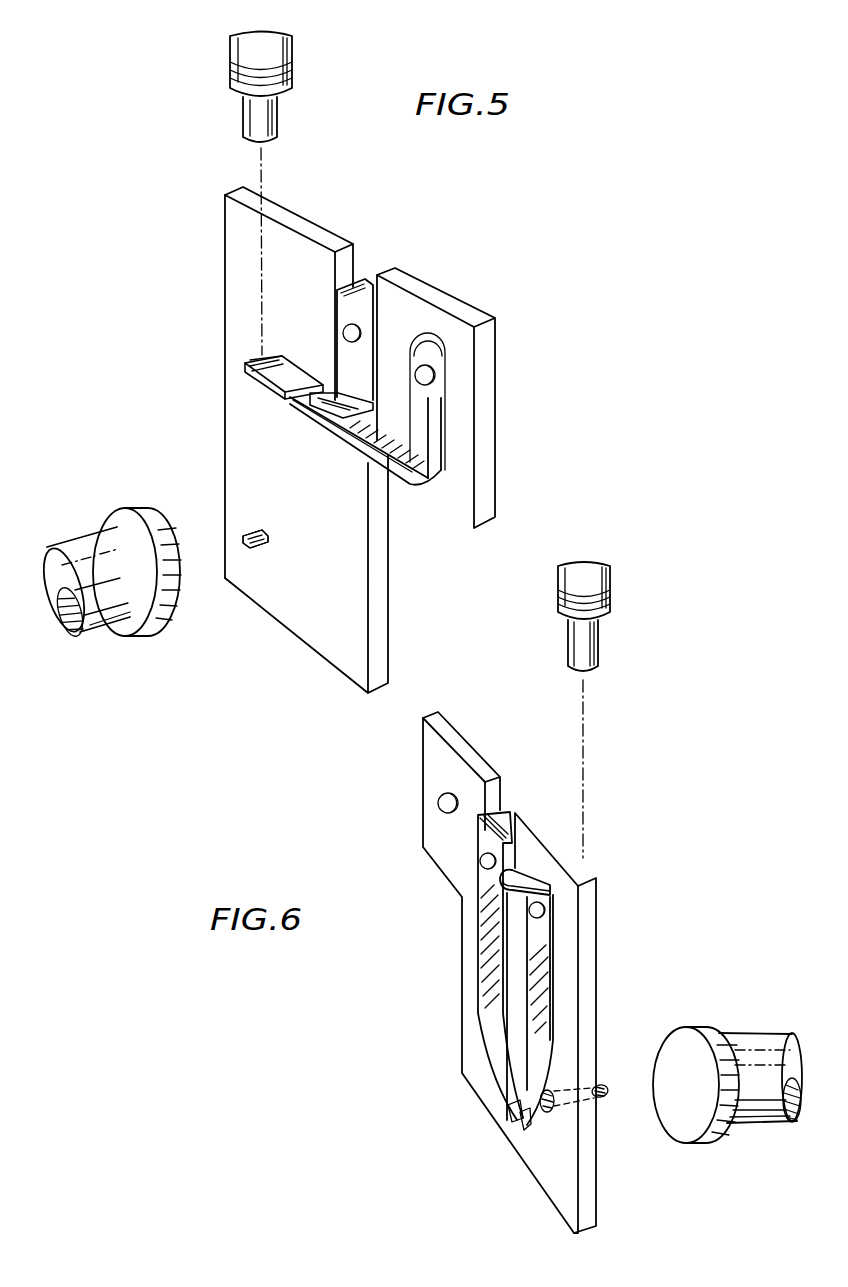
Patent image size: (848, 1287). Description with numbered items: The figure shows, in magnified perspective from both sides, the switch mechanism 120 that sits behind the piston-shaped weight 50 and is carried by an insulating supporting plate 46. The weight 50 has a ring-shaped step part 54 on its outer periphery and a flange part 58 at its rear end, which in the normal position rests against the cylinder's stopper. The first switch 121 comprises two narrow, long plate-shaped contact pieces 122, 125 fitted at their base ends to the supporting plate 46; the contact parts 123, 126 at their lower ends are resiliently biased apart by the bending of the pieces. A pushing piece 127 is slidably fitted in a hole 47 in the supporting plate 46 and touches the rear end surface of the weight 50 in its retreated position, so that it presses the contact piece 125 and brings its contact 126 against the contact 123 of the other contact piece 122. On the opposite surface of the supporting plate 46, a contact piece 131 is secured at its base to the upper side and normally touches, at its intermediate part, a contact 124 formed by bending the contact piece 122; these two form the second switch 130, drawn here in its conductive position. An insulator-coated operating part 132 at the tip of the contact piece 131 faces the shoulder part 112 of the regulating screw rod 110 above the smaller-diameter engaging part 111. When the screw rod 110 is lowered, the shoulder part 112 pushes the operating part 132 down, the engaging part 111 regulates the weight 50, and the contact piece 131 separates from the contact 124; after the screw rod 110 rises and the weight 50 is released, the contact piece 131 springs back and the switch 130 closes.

In FIG. 5, the insulating supporting plate 46 is at (350, 448).
In FIG. 6, the insulating supporting plate 46 is at (588, 910).
In FIG. 5, the hole in supporting plate 47 is at (263, 547).
In FIG. 5, the weight 50 is at (104, 569).
In FIG. 6, the weight 50 is at (727, 1077).
In FIG. 5, the step part 54 is at (110, 625).
In FIG. 6, the step part 54 is at (760, 1112).
In FIG. 5, the flange part 58 is at (152, 520).
In FIG. 6, the flange part 58 is at (717, 1130).
In FIG. 5, the regulating screw rod 110 is at (251, 194).
In FIG. 6, the regulating screw rod 110 is at (588, 710).
In FIG. 5, the engaging part 111 is at (268, 119).
In FIG. 6, the engaging part 111 is at (576, 652).
In FIG. 5, the shoulder part 112 is at (285, 97).
In FIG. 6, the shoulder part 112 is at (605, 622).
In FIG. 6, the switch mechanism 120 is at (507, 999).
In FIG. 6, the first switch 121 is at (484, 880).
In FIG. 5, the contact piece 122 is at (360, 290).
In FIG. 6, the contact piece 122 is at (488, 942).
In FIG. 6, the contact part 123 is at (505, 1112).
In FIG. 5, the contact 124 is at (358, 465).
In FIG. 6, the contact piece 125 is at (540, 957).
In FIG. 6, the contact part 126 is at (522, 1122).
In FIG. 5, the pushing piece 127 is at (247, 548).
In FIG. 6, the pushing piece 127 is at (606, 1086).
In FIG. 5, the second switch 130 is at (234, 394).
In FIG. 5, the contact piece 131 is at (374, 443).
In FIG. 5, the operating part 132 is at (272, 367).